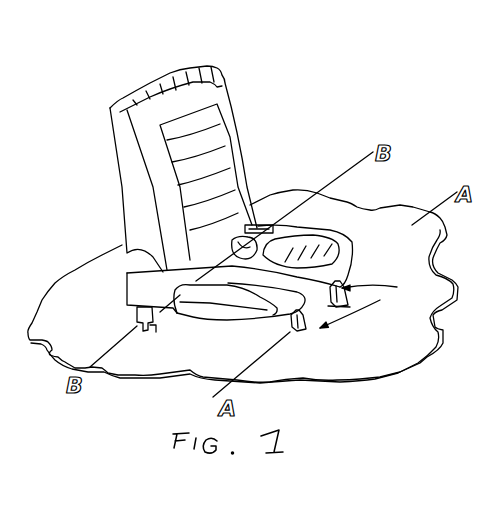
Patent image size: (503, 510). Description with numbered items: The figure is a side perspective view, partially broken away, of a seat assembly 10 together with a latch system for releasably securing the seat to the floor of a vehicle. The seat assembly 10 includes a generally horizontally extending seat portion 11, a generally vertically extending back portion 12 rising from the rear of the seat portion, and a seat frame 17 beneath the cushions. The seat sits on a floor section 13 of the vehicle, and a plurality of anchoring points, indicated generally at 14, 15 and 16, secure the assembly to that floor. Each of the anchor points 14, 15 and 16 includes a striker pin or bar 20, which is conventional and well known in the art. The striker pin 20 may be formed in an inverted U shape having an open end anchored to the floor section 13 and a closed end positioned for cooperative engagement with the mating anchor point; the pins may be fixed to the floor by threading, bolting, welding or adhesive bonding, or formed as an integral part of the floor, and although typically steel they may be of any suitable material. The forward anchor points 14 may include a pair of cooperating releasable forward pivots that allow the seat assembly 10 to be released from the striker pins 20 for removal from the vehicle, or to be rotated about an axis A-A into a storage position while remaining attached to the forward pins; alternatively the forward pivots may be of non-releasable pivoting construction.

The seat assembly 10 is at (343, 70).
The seat portion 11 is at (352, 198).
The back portion 12 is at (222, 76).
The floor section 13 is at (347, 287).
The forward anchor points 14 is at (367, 306).
The anchor point 15 is at (165, 344).
The anchor point 16 is at (247, 240).
The seat frame 17 is at (222, 298).
The striker pin 20 is at (263, 233).